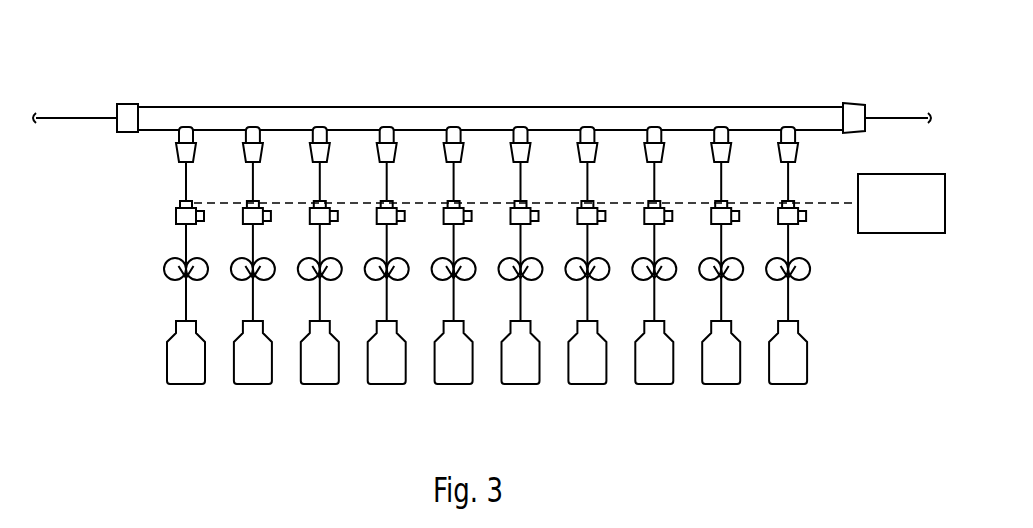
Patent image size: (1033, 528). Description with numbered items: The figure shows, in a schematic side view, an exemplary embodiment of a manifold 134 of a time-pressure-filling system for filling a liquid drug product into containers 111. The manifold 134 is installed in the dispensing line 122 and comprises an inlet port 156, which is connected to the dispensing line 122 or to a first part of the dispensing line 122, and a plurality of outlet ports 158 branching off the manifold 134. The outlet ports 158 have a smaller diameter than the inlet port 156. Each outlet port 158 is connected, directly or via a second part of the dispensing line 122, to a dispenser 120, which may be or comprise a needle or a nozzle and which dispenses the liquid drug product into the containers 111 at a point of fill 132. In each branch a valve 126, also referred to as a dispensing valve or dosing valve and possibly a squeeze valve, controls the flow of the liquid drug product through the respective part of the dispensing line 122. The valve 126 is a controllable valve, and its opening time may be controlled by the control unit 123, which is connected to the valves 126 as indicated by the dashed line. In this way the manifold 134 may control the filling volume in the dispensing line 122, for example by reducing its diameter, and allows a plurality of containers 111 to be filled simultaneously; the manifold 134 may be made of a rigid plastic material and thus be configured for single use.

The container 111 is at (166, 360).
The dispenser 120 is at (424, 281).
The dispensing line 122 is at (63, 118).
The control unit 123 is at (918, 214).
The valve 126 is at (175, 211).
The point of fill 132 is at (165, 276).
The manifold 134 is at (452, 112).
The inlet port 156 is at (127, 106).
The outlet port 158 is at (176, 155).